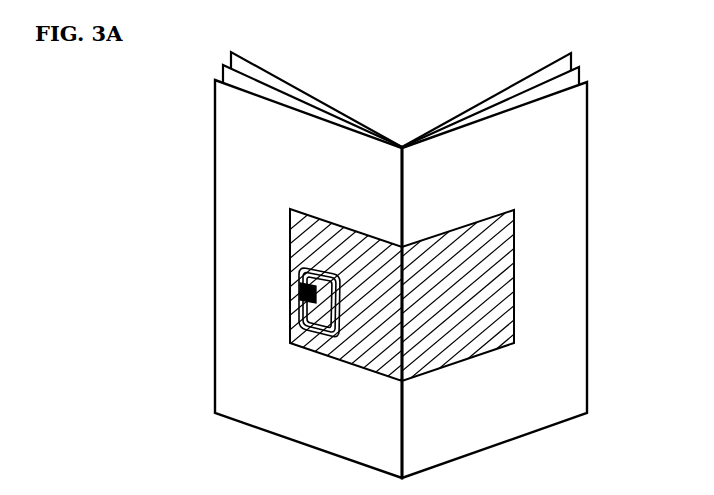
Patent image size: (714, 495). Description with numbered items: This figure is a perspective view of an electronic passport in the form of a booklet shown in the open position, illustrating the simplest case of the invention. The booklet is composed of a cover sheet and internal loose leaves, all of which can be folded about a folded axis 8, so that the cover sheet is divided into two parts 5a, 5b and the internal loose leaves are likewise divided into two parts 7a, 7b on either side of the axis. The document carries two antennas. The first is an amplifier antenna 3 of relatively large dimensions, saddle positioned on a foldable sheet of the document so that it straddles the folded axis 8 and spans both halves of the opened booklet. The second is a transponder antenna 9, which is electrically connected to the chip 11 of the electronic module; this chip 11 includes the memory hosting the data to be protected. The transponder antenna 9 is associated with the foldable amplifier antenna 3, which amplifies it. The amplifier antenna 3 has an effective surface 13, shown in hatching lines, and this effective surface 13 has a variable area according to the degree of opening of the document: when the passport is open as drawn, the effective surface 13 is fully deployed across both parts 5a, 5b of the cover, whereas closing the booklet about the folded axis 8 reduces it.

The amplifier antenna 3 is at (288, 208).
The cover sheet part 5a is at (515, 447).
The cover sheet part 5b is at (290, 445).
The internal loose leaf part 7a is at (500, 90).
The internal loose leaf part 7b is at (298, 87).
The folded axis 8 is at (410, 411).
The transponder antenna 9 is at (302, 325).
The chip 11 is at (298, 287).
The effective surface 13 is at (296, 244).